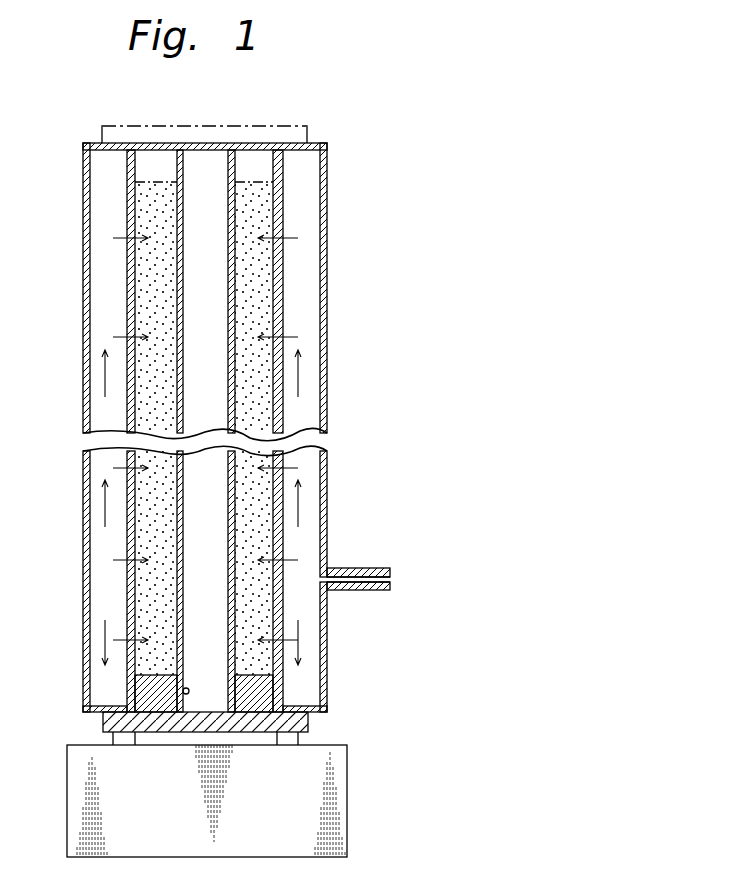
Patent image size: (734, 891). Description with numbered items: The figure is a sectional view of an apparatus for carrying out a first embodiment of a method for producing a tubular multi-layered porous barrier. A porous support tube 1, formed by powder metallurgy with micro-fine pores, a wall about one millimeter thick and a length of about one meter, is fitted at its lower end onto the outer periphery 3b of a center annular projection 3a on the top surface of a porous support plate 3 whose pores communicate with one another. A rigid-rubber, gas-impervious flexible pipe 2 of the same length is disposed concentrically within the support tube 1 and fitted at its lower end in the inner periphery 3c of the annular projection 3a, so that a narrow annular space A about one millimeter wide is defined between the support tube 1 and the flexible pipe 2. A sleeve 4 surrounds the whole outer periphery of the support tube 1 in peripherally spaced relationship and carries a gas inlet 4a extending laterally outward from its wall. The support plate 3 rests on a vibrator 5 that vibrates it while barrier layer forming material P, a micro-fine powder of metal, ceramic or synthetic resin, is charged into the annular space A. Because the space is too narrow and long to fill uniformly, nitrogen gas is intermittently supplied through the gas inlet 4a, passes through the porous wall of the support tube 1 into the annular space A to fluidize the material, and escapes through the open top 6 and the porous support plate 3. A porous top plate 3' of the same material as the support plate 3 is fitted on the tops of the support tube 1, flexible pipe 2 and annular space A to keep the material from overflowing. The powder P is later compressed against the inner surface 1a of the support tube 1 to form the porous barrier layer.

The porous support tube 1 is at (283, 253).
The inner surface 1a is at (137, 286).
The flexible pipe 2 is at (234, 300).
The porous support plate 3 is at (234, 725).
The porous top plate 3' is at (207, 115).
The center annular projection 3a is at (265, 688).
The outer periphery 3b is at (135, 690).
The inner periphery 3c is at (183, 692).
The sleeve 4 is at (327, 378).
The gas inlet 4a is at (349, 581).
The vibrator 5 is at (347, 800).
The open top 6 is at (262, 157).
The barrier layer forming material P is at (262, 193).
The annular space A is at (265, 483).